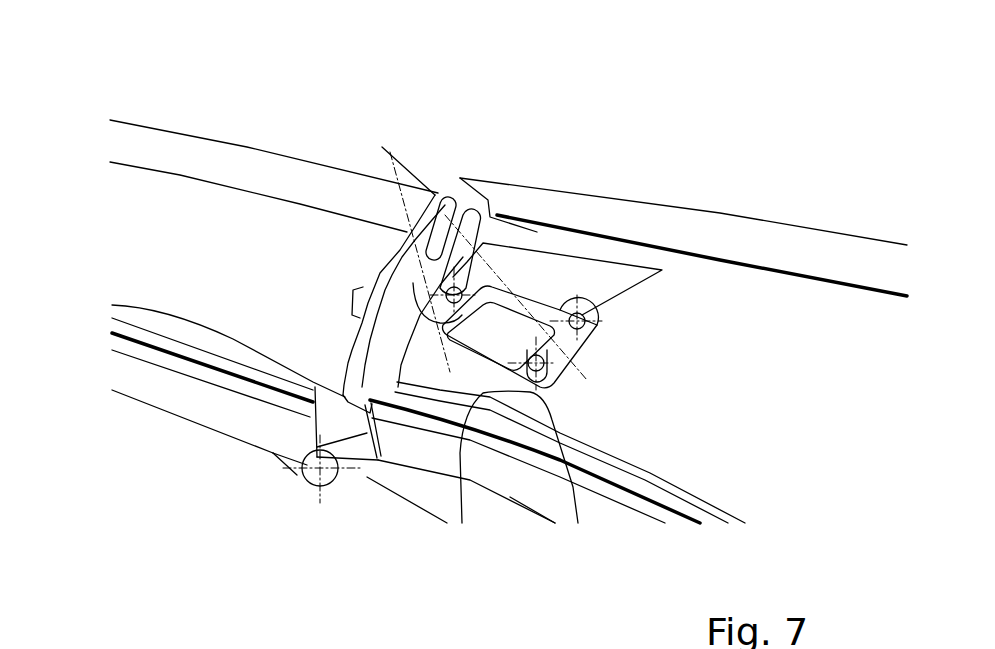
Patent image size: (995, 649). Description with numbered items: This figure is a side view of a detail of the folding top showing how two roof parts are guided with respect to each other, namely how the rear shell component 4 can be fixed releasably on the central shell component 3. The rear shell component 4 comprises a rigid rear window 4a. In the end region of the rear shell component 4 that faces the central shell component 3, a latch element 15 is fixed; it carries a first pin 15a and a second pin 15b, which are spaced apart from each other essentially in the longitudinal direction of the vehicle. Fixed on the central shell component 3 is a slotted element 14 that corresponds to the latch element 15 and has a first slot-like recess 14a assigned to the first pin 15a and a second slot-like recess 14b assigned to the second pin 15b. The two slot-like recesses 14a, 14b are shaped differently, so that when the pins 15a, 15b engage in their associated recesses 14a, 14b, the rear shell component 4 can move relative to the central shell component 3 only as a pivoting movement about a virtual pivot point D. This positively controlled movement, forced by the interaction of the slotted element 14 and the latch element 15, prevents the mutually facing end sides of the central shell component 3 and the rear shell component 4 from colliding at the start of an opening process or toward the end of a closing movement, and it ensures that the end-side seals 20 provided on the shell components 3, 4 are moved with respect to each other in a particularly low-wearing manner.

The central shell component 3 is at (228, 182).
The rear shell component 4 is at (708, 282).
The rigid rear window 4a is at (807, 245).
The slotted element 14 is at (495, 310).
The first slot-like recess 14a is at (423, 315).
The second slot-like recess 14b is at (545, 353).
The latch element 15 is at (586, 206).
The first pin 15a is at (476, 214).
The second pin 15b is at (580, 317).
The end-side seals 20 is at (345, 385).
The virtual pivot point D is at (484, 254).